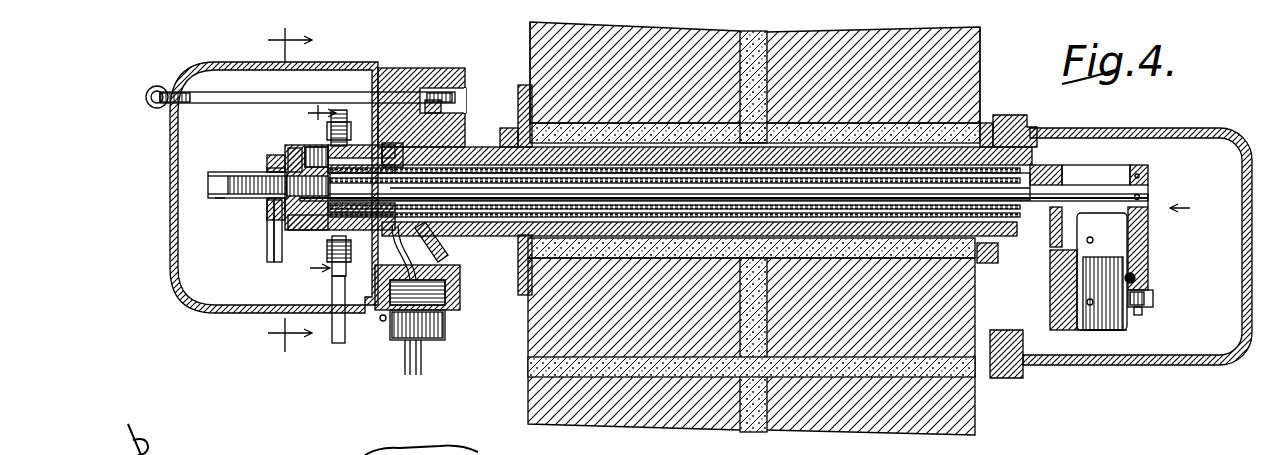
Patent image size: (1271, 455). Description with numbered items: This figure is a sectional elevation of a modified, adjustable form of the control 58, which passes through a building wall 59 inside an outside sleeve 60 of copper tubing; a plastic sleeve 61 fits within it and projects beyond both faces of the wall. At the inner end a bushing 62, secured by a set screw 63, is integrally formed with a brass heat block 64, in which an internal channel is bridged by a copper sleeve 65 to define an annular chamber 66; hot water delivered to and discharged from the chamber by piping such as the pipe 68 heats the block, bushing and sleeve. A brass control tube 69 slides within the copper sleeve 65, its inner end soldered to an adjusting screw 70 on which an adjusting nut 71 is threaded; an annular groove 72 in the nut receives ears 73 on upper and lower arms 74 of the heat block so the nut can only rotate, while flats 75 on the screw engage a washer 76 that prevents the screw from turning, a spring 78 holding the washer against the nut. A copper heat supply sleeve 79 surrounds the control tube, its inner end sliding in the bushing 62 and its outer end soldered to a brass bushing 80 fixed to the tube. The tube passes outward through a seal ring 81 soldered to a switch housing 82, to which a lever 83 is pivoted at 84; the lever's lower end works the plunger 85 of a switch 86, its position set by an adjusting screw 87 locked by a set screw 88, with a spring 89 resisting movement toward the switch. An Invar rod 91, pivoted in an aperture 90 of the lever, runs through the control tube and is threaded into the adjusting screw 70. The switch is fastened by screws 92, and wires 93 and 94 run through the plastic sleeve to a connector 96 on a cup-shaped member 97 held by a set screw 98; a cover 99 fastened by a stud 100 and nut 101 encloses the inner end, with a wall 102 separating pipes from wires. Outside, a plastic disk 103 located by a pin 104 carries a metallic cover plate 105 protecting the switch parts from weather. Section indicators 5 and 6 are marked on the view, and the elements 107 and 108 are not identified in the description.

The section line 5 is at (292, 188).
The section line 6 is at (316, 197).
The control 58 is at (996, 59).
The building wall 59 is at (985, 90).
The outside sleeve 60 is at (888, 135).
The sleeve 61 is at (838, 140).
The bushing 62 is at (470, 140).
The set screw 63 is at (392, 145).
The heat block 64 is at (330, 137).
The copper sleeve 65 is at (680, 186).
The annular chamber 66 is at (341, 187).
The pipe 68 is at (330, 345).
The control tube 69 is at (475, 176).
The adjusting screw 70 is at (225, 198).
The adjusting nut 71 is at (268, 158).
The annular groove 72 is at (272, 153).
The ears 73 is at (290, 150).
The arms 74 is at (293, 148).
The flats 75 is at (208, 188).
The washer 76 is at (266, 160).
The spring 78 is at (318, 232).
The heat supply sleeve 79 is at (614, 140).
The brass bushing 80 is at (895, 171).
The seal ring 81 is at (1010, 176).
The switch housing 82 is at (1046, 195).
The lever 83 is at (1140, 168).
The pivot 84 is at (1150, 178).
The plunger 85 is at (1118, 322).
The switch 86 is at (1090, 330).
The adjusting screw 87 is at (1150, 296).
The set screw 88 is at (1140, 315).
The spring 89 is at (1125, 278).
The aperture 90 is at (1130, 176).
The Invar rod 91 is at (985, 197).
The screws 92 is at (1098, 240).
The wire 93 is at (403, 368).
The wire 94 is at (428, 362).
The connector 96 is at (446, 330).
The cup-shaped member 97 is at (458, 295).
The set screw 98 is at (455, 258).
The cover 99 is at (232, 314).
The stud 100 is at (245, 90).
The nut 101 is at (156, 84).
The wall 102 is at (415, 70).
The plastic disk 103 is at (1008, 378).
The pin 104 is at (990, 378).
The metallic cover plate 105 is at (1168, 367).
The lower flange 107 is at (522, 296).
The upper flange 108 is at (510, 118).